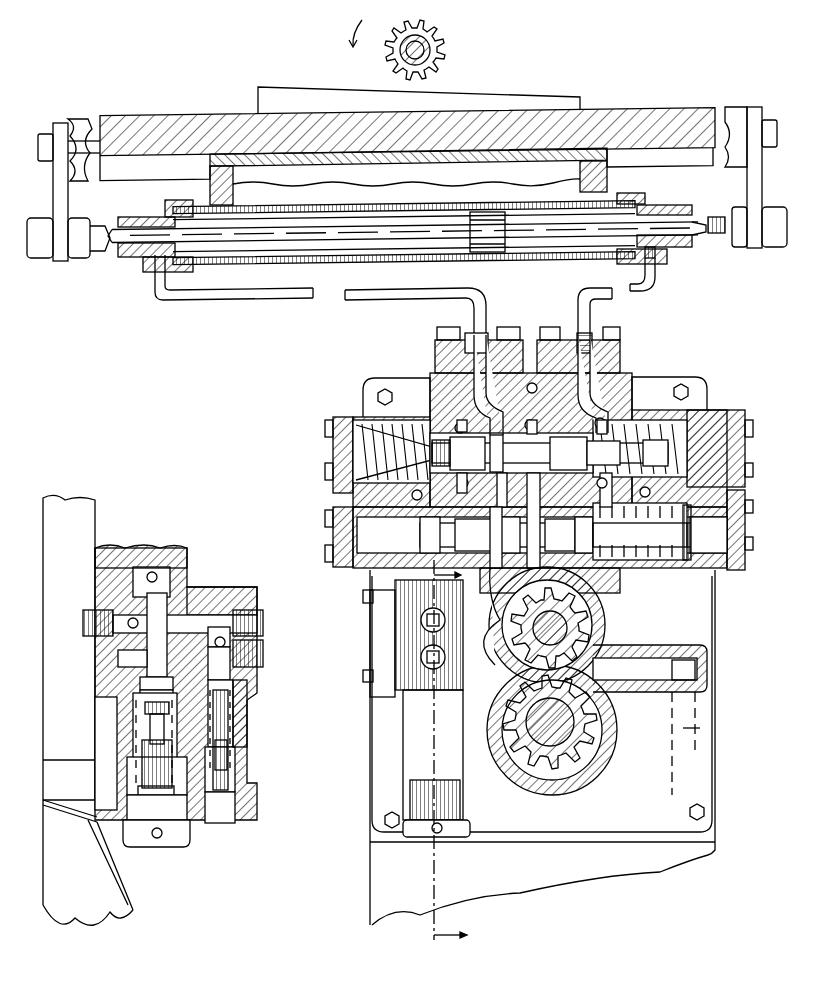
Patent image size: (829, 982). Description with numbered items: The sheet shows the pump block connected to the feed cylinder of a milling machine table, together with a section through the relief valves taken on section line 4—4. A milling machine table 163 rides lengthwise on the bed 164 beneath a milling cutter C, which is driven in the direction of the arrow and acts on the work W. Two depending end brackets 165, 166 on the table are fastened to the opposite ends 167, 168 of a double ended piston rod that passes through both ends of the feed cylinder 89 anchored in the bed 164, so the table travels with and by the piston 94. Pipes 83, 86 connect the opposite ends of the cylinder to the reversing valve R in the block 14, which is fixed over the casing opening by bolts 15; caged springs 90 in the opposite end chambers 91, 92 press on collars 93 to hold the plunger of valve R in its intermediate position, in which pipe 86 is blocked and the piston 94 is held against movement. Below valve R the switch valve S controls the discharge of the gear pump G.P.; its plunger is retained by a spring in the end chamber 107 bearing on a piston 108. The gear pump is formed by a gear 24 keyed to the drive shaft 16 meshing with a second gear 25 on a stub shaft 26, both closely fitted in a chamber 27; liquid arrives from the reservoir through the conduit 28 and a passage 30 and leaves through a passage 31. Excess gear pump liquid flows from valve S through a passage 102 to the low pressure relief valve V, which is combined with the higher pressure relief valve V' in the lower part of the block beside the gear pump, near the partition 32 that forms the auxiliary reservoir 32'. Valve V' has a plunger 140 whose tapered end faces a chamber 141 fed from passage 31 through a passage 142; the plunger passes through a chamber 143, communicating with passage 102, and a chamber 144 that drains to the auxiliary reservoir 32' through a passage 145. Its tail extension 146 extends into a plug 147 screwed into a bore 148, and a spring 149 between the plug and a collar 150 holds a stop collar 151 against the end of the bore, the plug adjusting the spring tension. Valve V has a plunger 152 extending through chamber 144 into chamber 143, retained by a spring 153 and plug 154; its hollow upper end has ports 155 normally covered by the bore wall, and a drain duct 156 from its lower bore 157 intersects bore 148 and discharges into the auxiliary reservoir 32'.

In FIG. 3, the milling cutter C is at (443, 28).
In FIG. 3, the work W is at (294, 100).
In FIG. 3, the milling machine table 163 is at (168, 125).
In FIG. 3, the bed 164 is at (212, 186).
In FIG. 3, the depending end bracket 165 is at (58, 190).
In FIG. 3, the depending end bracket 166 is at (756, 192).
In FIG. 3, the end of piston rod 167 is at (118, 250).
In FIG. 3, the end of piston rod 168 is at (702, 234).
In FIG. 3, the feed cylinder 89 is at (429, 246).
In FIG. 3, the piston 94 is at (497, 242).
In FIG. 3, the pipe 86 is at (656, 290).
In FIG. 3, the pipe 83 is at (270, 303).
In FIG. 3, the caged springs 90 is at (372, 400).
In FIG. 3, the end chamber 91 is at (340, 425).
In FIG. 3, the end chamber 92 is at (708, 416).
In FIG. 3, the collars 93 is at (398, 427).
In FIG. 3, the reversing valve R is at (330, 464).
In FIG. 3, the switch valve S is at (745, 528).
In FIG. 3, the end chamber 107 is at (668, 565).
In FIG. 3, the piston 108 is at (700, 557).
In FIG. 3, the block 14 is at (535, 630).
In FIG. 4, the block 14 is at (255, 789).
In FIG. 3, the bolts 15 is at (706, 812).
In FIG. 3, the drive shaft 16 is at (572, 732).
In FIG. 3, the gear 24 is at (578, 744).
In FIG. 3, the second gear 25 is at (562, 631).
In FIG. 3, the stub shaft 26 is at (590, 628).
In FIG. 3, the chamber 27 is at (510, 668).
In FIG. 3, the conduit 28 is at (705, 728).
In FIG. 3, the passage 30 is at (640, 668).
In FIG. 3, the passage 31 is at (470, 630).
In FIG. 3, the section line 4— 4 is at (431, 759).
In FIG. 3, the gear pump G.P. is at (550, 696).
In FIG. 4, the partition 32 is at (88, 710).
In FIG. 4, the auxiliary reservoir 32' is at (54, 745).
In FIG. 4, the passage 102 is at (130, 618).
In FIG. 4, the plunger 140 is at (187, 615).
In FIG. 4, the chamber 141 is at (172, 572).
In FIG. 4, the passage 142 is at (150, 566).
In FIG. 4, the chamber 143 is at (222, 620).
In FIG. 4, the chamber 144 is at (128, 658).
In FIG. 4, the passage 145 is at (100, 675).
In FIG. 4, the tail extension 146 is at (150, 785).
In FIG. 4, the plug 147 is at (175, 833).
In FIG. 4, the bore 148 is at (150, 768).
In FIG. 4, the spring 149 is at (138, 753).
In FIG. 4, the collar 150 is at (128, 707).
In FIG. 4, the stop collar 151 is at (130, 690).
In FIG. 4, the plunger 152 is at (240, 652).
In FIG. 4, the spring 153 is at (235, 702).
In FIG. 4, the plug 154 is at (232, 824).
In FIG. 4, the ports 155 is at (258, 596).
In FIG. 4, the drain duct 156 is at (240, 727).
In FIG. 4, the lower bore 157 is at (238, 752).
In FIG. 4, the low pressure relief valve V is at (252, 661).
In FIG. 4, the high pressure relief valve V' is at (115, 617).